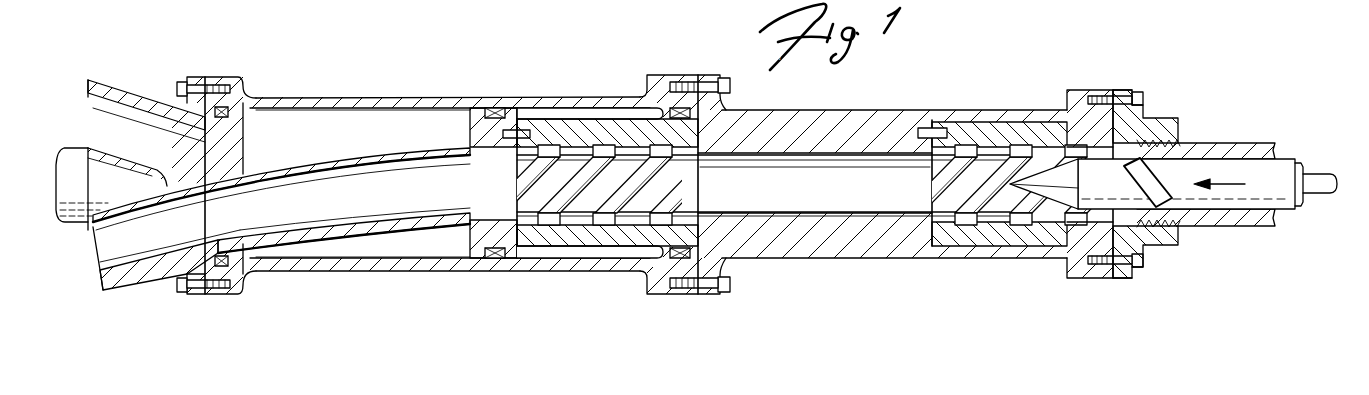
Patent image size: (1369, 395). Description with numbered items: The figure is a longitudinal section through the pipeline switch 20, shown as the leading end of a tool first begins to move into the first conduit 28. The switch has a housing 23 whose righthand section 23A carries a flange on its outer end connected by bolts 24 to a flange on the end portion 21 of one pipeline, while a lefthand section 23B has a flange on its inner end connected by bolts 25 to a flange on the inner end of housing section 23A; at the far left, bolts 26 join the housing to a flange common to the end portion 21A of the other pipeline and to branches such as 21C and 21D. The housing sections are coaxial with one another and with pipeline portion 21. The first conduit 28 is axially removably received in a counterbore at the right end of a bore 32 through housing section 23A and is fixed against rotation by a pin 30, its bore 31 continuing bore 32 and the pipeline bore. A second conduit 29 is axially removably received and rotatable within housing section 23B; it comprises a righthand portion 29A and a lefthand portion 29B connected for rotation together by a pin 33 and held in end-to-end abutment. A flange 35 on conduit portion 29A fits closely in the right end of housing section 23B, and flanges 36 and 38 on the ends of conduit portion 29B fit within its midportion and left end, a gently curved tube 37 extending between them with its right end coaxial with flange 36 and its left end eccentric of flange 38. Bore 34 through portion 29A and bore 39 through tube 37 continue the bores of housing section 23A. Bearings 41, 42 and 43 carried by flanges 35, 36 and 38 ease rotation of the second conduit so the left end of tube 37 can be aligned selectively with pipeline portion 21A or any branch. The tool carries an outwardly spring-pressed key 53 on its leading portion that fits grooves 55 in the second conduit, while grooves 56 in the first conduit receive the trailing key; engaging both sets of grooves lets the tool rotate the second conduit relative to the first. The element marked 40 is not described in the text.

The switch 20 is at (598, 309).
The pipeline end portion 21 is at (1253, 141).
The end portion of the other pipeline 21A is at (112, 292).
The branch 21C is at (120, 89).
The branch 21D is at (66, 150).
The housing 23 is at (782, 262).
The righthand housing section 23A is at (974, 260).
The lefthand housing section 23B is at (307, 273).
The bolts 24 is at (1140, 95).
The bolts 25 is at (728, 76).
The bolts 26 is at (178, 82).
The first conduit 28 is at (1023, 112).
The second conduit 29 is at (605, 120).
The righthand portion of second conduit 29A is at (562, 247).
The lefthand portion of second conduit 29B is at (373, 150).
The pin 30 is at (922, 127).
The bore 31 is at (938, 214).
The bore 32 is at (780, 213).
The pin 33 is at (516, 128).
The bore 34 is at (520, 207).
The flange 35 is at (665, 262).
The flange 36 is at (474, 268).
The gently curved tube 37 is at (276, 166).
The flange 38 is at (237, 133).
The bore 39 is at (281, 224).
The pipe end 40 is at (99, 266).
The bearing 41 is at (683, 245).
The bearing 42 is at (496, 260).
The bearing 43 is at (222, 106).
The spring-pressed key 53 is at (1130, 181).
The grooves 55 is at (549, 145).
The grooves 56 is at (975, 143).